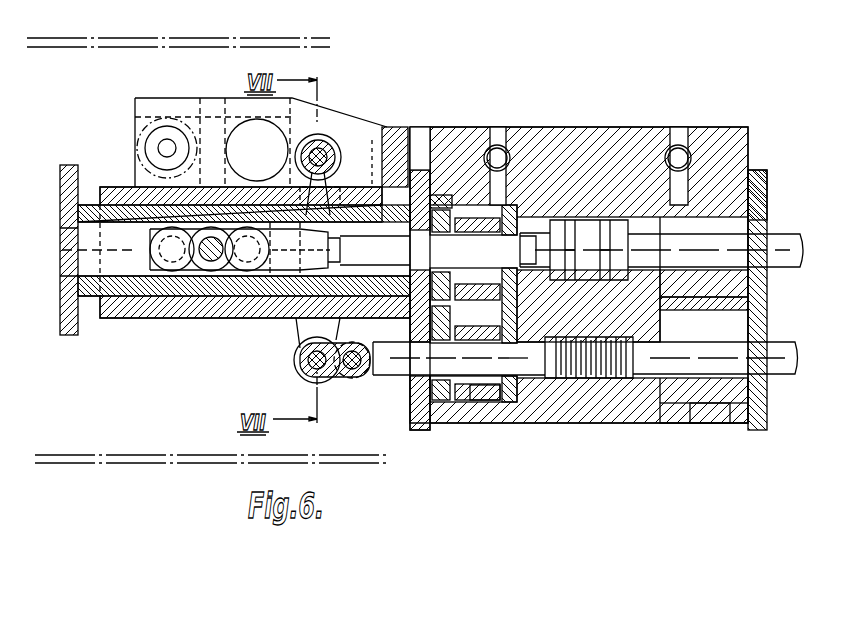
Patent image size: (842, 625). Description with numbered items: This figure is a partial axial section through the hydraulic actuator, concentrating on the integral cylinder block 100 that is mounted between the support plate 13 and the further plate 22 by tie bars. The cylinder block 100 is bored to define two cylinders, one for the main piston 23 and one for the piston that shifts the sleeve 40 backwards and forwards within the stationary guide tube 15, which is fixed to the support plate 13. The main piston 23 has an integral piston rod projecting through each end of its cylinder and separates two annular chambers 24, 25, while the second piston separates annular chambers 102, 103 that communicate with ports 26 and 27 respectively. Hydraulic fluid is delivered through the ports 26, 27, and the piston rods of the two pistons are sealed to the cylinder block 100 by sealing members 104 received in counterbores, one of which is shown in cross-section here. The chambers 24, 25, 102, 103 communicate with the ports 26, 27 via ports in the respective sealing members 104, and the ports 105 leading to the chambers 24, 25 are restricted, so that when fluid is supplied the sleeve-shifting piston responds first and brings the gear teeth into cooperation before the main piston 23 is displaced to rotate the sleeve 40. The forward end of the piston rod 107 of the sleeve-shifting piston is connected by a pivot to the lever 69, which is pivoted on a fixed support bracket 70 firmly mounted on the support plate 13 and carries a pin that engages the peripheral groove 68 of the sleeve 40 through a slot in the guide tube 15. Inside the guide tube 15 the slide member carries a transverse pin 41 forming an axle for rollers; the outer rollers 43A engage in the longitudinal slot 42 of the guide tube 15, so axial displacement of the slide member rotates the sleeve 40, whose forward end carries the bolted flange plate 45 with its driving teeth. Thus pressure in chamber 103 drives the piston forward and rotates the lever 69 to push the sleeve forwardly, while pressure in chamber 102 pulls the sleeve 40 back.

The support plate 13 is at (422, 431).
The guide tube 15 is at (152, 308).
The plate 22 is at (767, 420).
The piston 23 is at (598, 215).
The annular chamber 24 is at (530, 375).
The annular chamber 25 is at (650, 213).
The port 26 is at (497, 180).
The port 27 is at (677, 138).
The sleeve 40 is at (256, 290).
The transverse pin 41 is at (222, 262).
The longitudinal slot 42 is at (156, 243).
The outer roller 43A is at (205, 262).
The flange plate 45 is at (75, 172).
The peripheral groove 68 is at (292, 334).
The lever 69 is at (347, 162).
The support bracket 70 is at (338, 117).
The cylinder block 100 is at (572, 157).
The annular chamber 102 is at (543, 378).
The annular chamber 103 is at (647, 377).
The sealing member 104 is at (445, 203).
The port 105 is at (528, 217).
The piston rod 107 is at (402, 365).